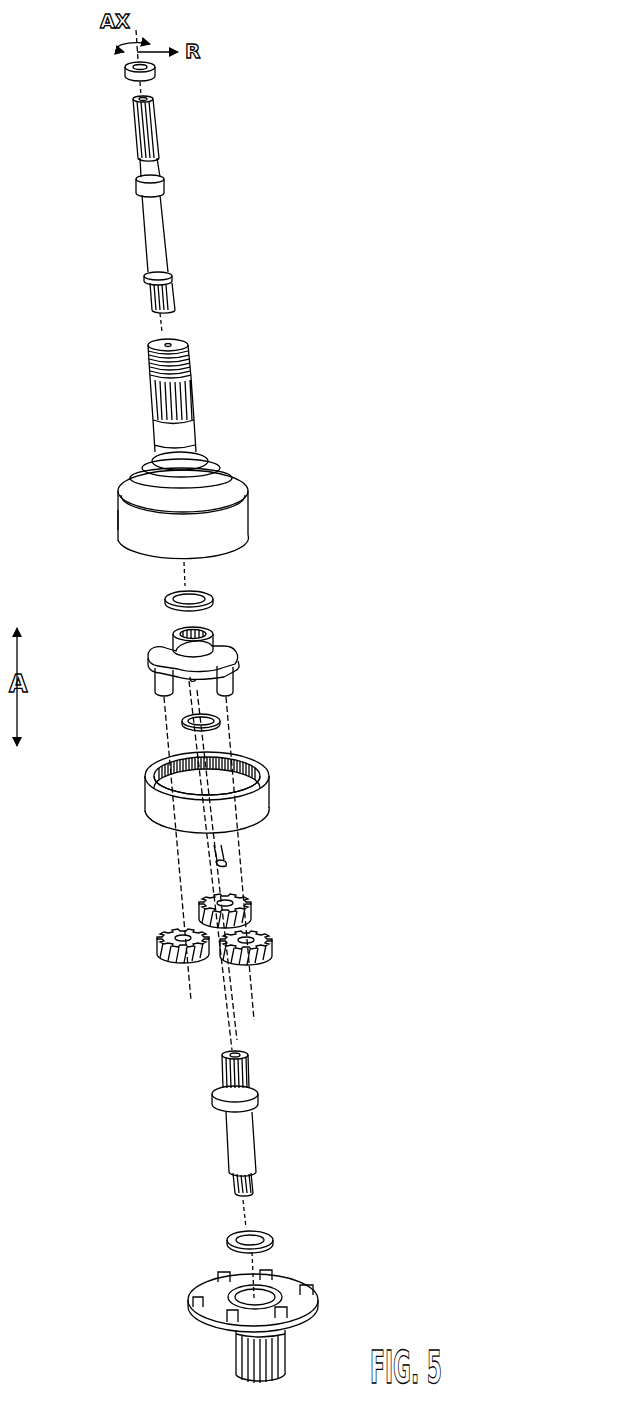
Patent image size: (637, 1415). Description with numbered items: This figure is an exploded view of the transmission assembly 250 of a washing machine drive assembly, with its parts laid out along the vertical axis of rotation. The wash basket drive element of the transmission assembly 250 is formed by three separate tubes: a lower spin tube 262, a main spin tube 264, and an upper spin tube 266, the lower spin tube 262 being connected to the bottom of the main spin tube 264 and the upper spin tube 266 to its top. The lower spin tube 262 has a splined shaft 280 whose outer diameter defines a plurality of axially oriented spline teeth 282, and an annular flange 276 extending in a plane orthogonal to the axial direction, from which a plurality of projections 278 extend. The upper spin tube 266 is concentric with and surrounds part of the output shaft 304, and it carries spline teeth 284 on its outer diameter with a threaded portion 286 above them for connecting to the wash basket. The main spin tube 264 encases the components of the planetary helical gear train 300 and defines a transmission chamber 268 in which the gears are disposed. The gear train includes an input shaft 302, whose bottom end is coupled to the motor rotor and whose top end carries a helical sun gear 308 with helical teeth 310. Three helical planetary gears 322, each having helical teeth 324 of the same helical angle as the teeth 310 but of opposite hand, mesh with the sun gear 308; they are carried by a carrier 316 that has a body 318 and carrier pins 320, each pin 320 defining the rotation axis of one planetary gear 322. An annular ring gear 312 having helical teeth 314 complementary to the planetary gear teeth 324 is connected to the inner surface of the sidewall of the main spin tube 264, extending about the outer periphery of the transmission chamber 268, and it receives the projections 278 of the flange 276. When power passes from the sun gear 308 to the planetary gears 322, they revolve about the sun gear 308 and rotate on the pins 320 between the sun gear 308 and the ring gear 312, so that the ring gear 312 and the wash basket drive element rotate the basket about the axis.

The transmission assembly 250 is at (474, 456).
The lower spin tube 262 is at (238, 1308).
The main spin tube 264 is at (262, 508).
The upper spin tube 266 is at (199, 431).
The transmission chamber 268 is at (112, 521).
The flange 276 is at (301, 1283).
The projections 278 is at (220, 1276).
The splined shaft 280 is at (238, 1336).
The spline teeth 282 is at (289, 1355).
The spline teeth 284 is at (145, 398).
The threaded portion 286 is at (146, 362).
The planetary helical gear train 300 is at (284, 749).
The input shaft 302 is at (231, 1139).
The output shaft 304 is at (146, 238).
The sun gear 308 is at (250, 1073).
The helical teeth 310 is at (217, 1080).
The ring gear 312 is at (211, 790).
The helical teeth 314 is at (160, 769).
The carrier 316 is at (251, 650).
The body 318 is at (168, 640).
The carrier pins 320 is at (156, 687).
The planetary gears 322 is at (236, 903).
The helical teeth 324 is at (345, 912).